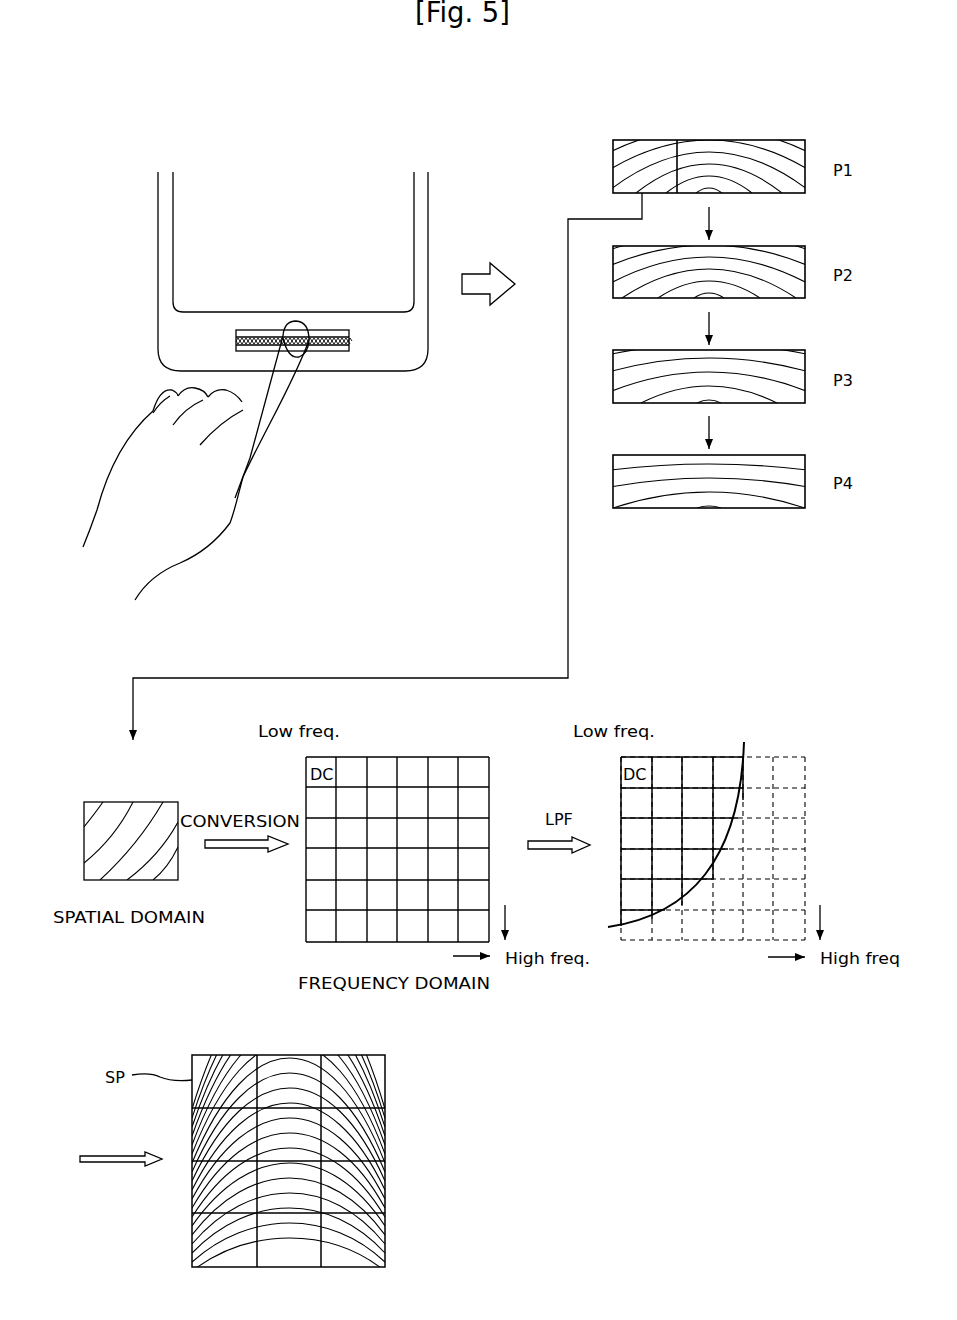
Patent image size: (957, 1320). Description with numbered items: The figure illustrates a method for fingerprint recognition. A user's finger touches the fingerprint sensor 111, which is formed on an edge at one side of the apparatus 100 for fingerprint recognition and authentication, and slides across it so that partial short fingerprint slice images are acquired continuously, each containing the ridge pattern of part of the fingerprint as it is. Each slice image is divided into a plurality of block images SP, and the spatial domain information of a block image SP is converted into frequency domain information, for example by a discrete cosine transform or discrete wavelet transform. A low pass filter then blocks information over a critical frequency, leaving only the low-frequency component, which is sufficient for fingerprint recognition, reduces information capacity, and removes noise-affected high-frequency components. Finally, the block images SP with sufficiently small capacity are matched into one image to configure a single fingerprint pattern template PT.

The apparatus for fingerprint recognition and authentication 100 is at (146, 258).
The fingerprint sensor 111 is at (335, 352).
The block image SP is at (83, 840).
The fingerprint pattern template PT is at (192, 1198).